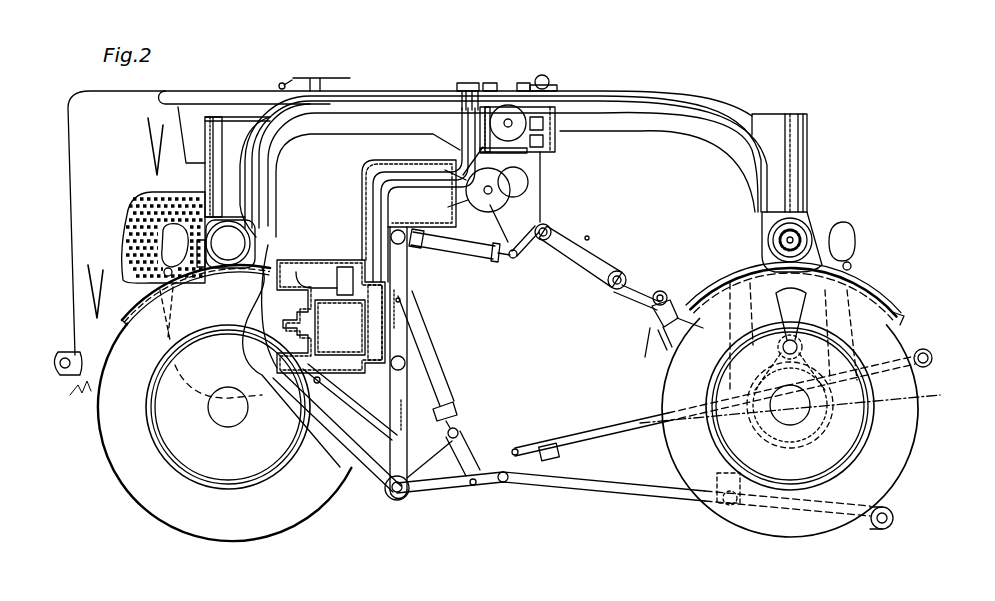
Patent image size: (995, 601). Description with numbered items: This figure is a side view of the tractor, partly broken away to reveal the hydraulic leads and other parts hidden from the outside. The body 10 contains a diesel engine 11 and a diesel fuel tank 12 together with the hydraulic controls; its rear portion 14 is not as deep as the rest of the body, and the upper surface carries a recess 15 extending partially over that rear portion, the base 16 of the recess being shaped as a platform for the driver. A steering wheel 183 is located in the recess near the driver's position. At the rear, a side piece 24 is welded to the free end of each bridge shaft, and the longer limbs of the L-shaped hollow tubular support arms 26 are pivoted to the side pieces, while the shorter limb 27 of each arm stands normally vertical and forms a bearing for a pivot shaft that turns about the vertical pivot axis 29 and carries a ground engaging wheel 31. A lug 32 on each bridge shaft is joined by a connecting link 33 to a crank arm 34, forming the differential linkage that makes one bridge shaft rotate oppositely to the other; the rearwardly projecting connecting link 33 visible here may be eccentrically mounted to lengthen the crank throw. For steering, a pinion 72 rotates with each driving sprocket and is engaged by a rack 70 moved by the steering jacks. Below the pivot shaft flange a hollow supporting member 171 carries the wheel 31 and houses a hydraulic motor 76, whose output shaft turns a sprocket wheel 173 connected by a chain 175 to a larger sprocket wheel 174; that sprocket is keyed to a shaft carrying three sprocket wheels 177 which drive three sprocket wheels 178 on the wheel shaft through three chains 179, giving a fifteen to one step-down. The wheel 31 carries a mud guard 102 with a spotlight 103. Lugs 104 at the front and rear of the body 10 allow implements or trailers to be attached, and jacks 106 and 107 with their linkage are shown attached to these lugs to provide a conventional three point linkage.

The body 10 is at (114, 192).
The diesel engine 11 is at (98, 358).
The diesel fuel tank 12 is at (542, 200).
The rear portion 14 is at (565, 232).
The recess 15 is at (397, 143).
The base 16 is at (312, 250).
The side piece 24 is at (518, 147).
The support arm 26 is at (716, 146).
The shorter limb 27 is at (800, 132).
The pivot axis 29 is at (776, 113).
The ground engaging wheel 31 is at (893, 343).
The lug 32 is at (473, 82).
The connecting link 33 is at (527, 168).
The crank arm 34 is at (532, 235).
The rack 70 is at (498, 82).
The pinion 72 is at (465, 82).
The hydraulic motor 76 is at (237, 237).
The mud guard 102 is at (878, 302).
The spotlight 103 is at (845, 242).
The lug 104 is at (548, 79).
The jack 106 is at (478, 262).
The jack 107 is at (410, 346).
The hollow supporting member 171 is at (805, 243).
The sprocket wheel 173 is at (815, 237).
The larger sprocket wheel 174 is at (747, 247).
The chain 175 is at (757, 270).
The sprocket wheel 177 is at (730, 278).
The sprocket wheel 178 is at (922, 397).
The chain 179 is at (930, 366).
The steering wheel 183 is at (347, 80).